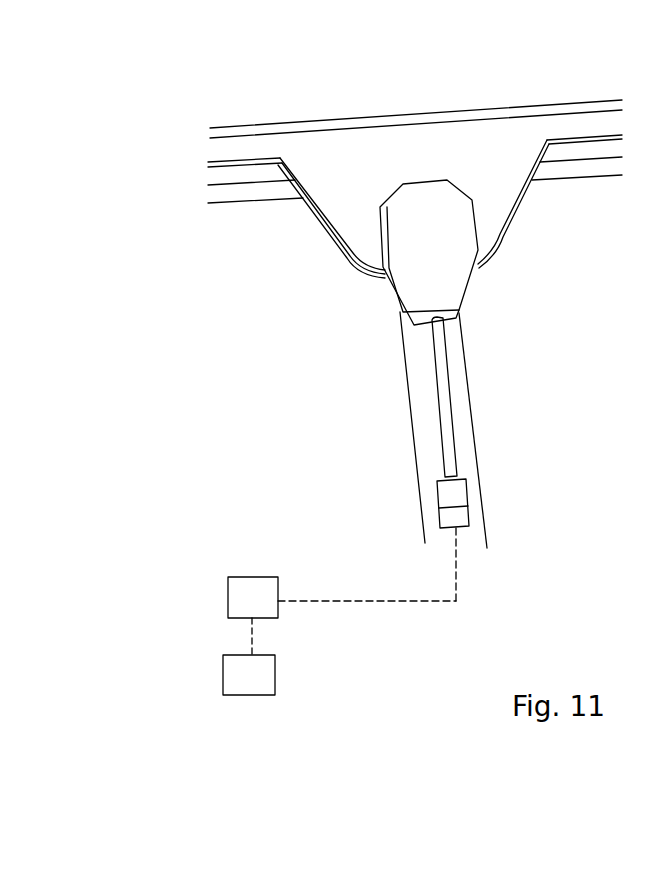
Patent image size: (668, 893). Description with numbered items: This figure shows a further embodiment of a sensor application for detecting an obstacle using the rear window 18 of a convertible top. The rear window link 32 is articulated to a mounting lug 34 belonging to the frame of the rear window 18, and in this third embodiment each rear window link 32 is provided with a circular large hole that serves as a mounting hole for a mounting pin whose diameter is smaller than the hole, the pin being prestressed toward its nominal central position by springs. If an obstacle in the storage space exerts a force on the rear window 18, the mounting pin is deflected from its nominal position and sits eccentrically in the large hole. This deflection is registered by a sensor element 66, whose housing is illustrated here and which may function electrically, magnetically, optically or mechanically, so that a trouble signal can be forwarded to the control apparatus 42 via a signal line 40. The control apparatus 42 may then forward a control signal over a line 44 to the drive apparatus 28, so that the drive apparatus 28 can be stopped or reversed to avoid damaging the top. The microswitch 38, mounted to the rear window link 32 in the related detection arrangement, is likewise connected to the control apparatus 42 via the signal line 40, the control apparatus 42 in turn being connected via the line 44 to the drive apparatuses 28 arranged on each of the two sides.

The rear window 18 is at (258, 114).
The microswitch 38 is at (572, 118).
The mounting lug 34 is at (497, 192).
The sensor element 66 is at (423, 255).
The rear window link 32 is at (470, 535).
The signal line 40 is at (455, 563).
The control apparatus 42 is at (342, 573).
The line 44 is at (252, 630).
The drive apparatus 28 is at (249, 675).